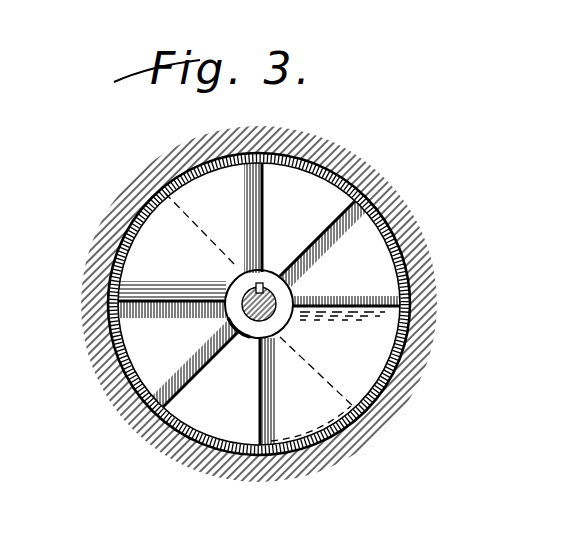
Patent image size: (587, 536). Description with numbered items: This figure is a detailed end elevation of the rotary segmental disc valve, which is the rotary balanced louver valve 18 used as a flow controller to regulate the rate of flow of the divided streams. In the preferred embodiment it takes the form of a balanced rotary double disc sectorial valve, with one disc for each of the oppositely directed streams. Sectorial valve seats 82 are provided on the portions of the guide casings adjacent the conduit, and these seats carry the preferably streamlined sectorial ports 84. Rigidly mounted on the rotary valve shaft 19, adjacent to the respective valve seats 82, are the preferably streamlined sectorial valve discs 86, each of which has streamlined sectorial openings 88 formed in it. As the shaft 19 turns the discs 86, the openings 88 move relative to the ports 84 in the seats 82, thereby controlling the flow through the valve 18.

The rotary balanced louver valve 18 is at (248, 322).
The rotary valve shaft 19 is at (272, 310).
The sectorial valve seats 82 is at (263, 217).
The sectorial ports 84 is at (307, 187).
The sectorial valve discs 86 is at (145, 258).
The sectorial openings 88 is at (248, 382).